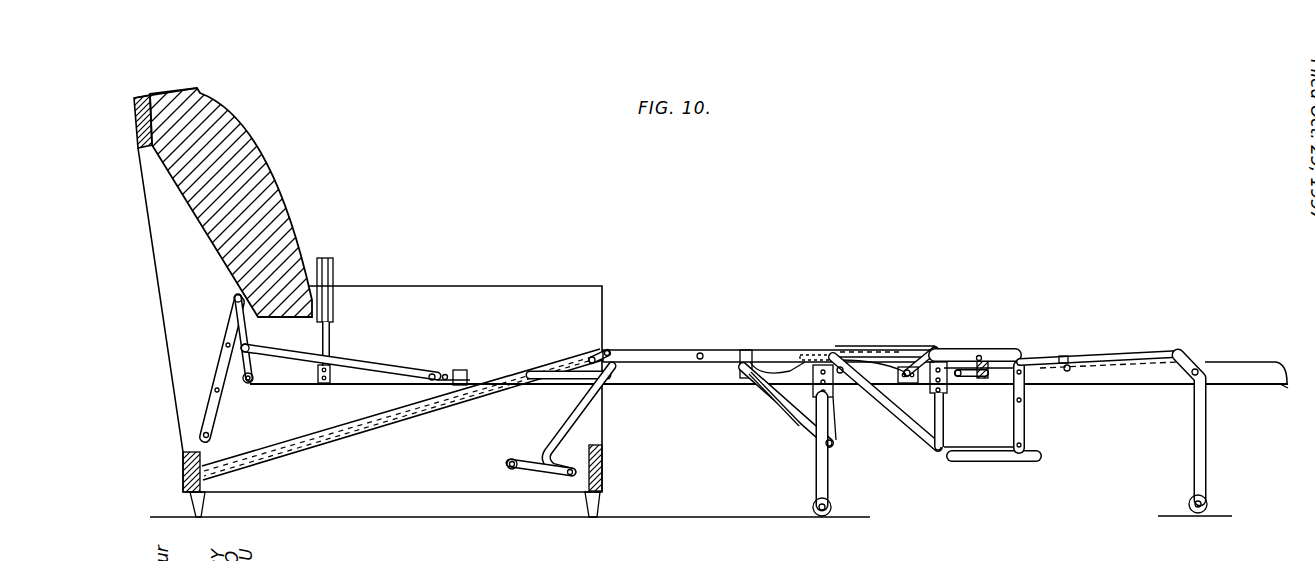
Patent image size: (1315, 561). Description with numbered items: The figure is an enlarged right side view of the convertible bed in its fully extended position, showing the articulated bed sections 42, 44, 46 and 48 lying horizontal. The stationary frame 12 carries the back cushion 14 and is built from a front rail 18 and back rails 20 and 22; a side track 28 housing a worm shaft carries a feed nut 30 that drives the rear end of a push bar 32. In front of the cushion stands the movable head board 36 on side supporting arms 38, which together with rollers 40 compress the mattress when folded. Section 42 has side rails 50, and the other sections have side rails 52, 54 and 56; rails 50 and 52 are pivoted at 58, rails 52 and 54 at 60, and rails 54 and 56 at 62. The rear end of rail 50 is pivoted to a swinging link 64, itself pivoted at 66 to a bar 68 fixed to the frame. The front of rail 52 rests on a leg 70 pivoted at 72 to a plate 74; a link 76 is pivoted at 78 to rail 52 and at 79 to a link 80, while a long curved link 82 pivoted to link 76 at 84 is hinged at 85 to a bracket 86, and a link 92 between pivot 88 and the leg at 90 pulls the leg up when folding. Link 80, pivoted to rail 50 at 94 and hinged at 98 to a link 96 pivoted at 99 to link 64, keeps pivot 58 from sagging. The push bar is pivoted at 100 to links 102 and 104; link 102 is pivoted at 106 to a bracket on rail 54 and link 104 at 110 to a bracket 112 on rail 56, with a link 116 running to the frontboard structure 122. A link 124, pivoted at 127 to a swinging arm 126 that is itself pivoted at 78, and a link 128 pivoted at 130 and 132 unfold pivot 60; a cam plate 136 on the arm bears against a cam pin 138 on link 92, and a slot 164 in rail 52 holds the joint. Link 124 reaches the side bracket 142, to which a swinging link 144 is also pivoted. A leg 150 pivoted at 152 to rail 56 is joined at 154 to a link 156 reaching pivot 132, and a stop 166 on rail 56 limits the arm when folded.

The stationary frame 12 is at (450, 520).
The back cushion 14 is at (260, 168).
The front rail 18 is at (603, 465).
The back rail 20 is at (142, 97).
The back rail 22 is at (205, 456).
The side track 28 is at (563, 352).
The feed nut 30 is at (595, 348).
The push bar 32 is at (620, 353).
The movable head board 36 is at (336, 266).
The side supporting arm 38 is at (334, 336).
The roller 40 is at (1282, 388).
The bed section 42 is at (354, 385).
The intermediate bed section 44 is at (514, 356).
The connecting bed section 46 is at (885, 384).
The end bed section 48 is at (1127, 388).
The side rail 50 is at (283, 386).
The side rail 52 is at (680, 386).
The side rail 54 is at (876, 362).
The side rail 56 is at (1226, 362).
The pivot 58 is at (462, 368).
The pivot 60 is at (843, 376).
The pivot 62 is at (958, 380).
The swinging link 64 is at (244, 383).
The pivot 66 is at (235, 294).
The bar 68 is at (228, 318).
The leg 70 is at (830, 489).
The pivot 72 is at (818, 385).
The plate 74 is at (836, 410).
The link 76 is at (652, 355).
The pivot 78 is at (752, 351).
The pivot 79 is at (634, 353).
The link 80 is at (570, 386).
The long curved link 82 is at (613, 390).
The pivot 84 is at (667, 356).
The hinge 85 is at (545, 477).
The bracket 86 is at (516, 469).
The pivot 88 is at (705, 355).
The pivot 90 is at (833, 448).
The link 92 is at (805, 432).
The pivot 94 is at (436, 372).
The link 96 is at (385, 368).
The hinge 98 is at (440, 384).
The pivot 99 is at (252, 348).
The pivot 100 is at (940, 349).
The link 102 is at (914, 360).
The link 104 is at (983, 348).
The pivot 106 is at (912, 386).
The pivot 110 is at (984, 356).
The bracket 112 is at (986, 378).
The link 116 is at (1027, 427).
The frontboard structure 122 is at (996, 468).
The link 124 is at (912, 432).
The swinging arm 126 is at (792, 357).
The pivot 127 is at (825, 343).
The link 128 is at (860, 350).
The pivot 130 is at (813, 362).
The pivot 132 is at (905, 365).
The cam plate 136 is at (775, 366).
The cam pin 138 is at (745, 379).
The side bracket 142 is at (960, 464).
The swinging link 144 is at (944, 424).
The leg 150 is at (1208, 436).
The pivot 152 is at (1190, 377).
The pivot 154 is at (1178, 351).
The link 156 is at (1128, 356).
The slot 164 is at (778, 404).
The stop 166 is at (1063, 355).